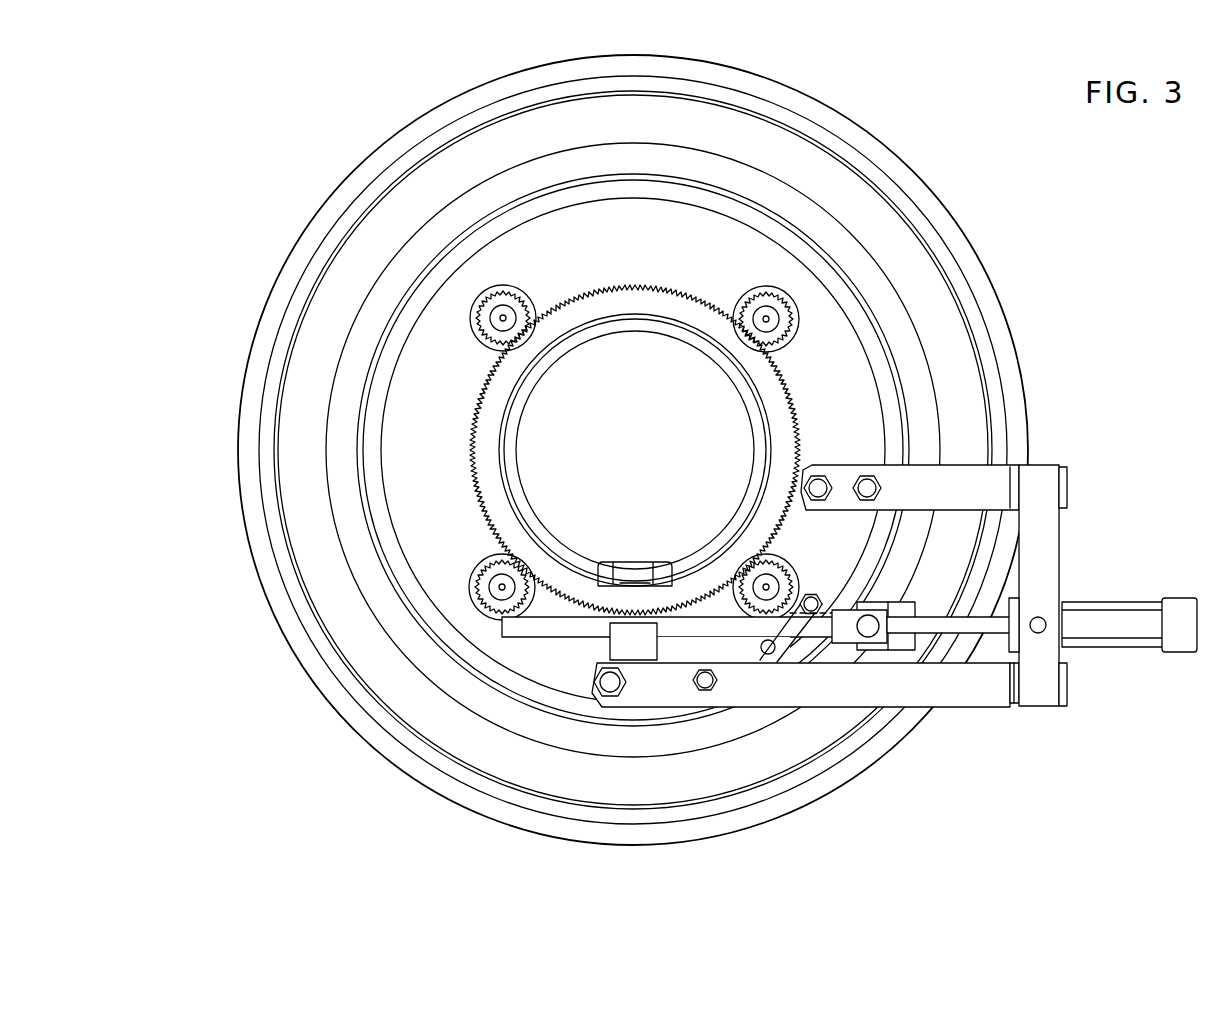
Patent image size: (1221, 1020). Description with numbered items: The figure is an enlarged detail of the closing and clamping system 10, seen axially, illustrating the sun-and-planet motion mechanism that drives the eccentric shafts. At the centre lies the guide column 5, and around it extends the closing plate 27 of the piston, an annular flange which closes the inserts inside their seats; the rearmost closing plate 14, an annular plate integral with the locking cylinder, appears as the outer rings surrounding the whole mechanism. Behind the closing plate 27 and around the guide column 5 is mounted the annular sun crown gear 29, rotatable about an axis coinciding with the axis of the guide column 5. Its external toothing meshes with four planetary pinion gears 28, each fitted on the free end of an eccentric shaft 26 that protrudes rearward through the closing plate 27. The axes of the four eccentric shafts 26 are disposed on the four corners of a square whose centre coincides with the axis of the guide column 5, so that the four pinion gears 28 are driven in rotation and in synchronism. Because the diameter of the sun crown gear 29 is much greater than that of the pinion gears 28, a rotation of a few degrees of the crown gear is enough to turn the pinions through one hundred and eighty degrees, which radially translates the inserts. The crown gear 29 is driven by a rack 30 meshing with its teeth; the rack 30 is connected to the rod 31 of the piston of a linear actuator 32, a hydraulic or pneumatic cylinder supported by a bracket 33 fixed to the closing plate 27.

The brake drum assembly 10 is at (1000, 260).
The annular closing plate 14 is at (963, 412).
The closing plate 27 is at (850, 398).
The sun crown gear 29 is at (698, 317).
The guide column 5 is at (657, 452).
The pinion gear 28 is at (797, 327).
The eccentric shaft 26 is at (767, 318).
The rack 30 is at (523, 628).
The rod 31 is at (968, 625).
The linear actuator 32 is at (1130, 623).
The bracket 33 is at (1050, 555).